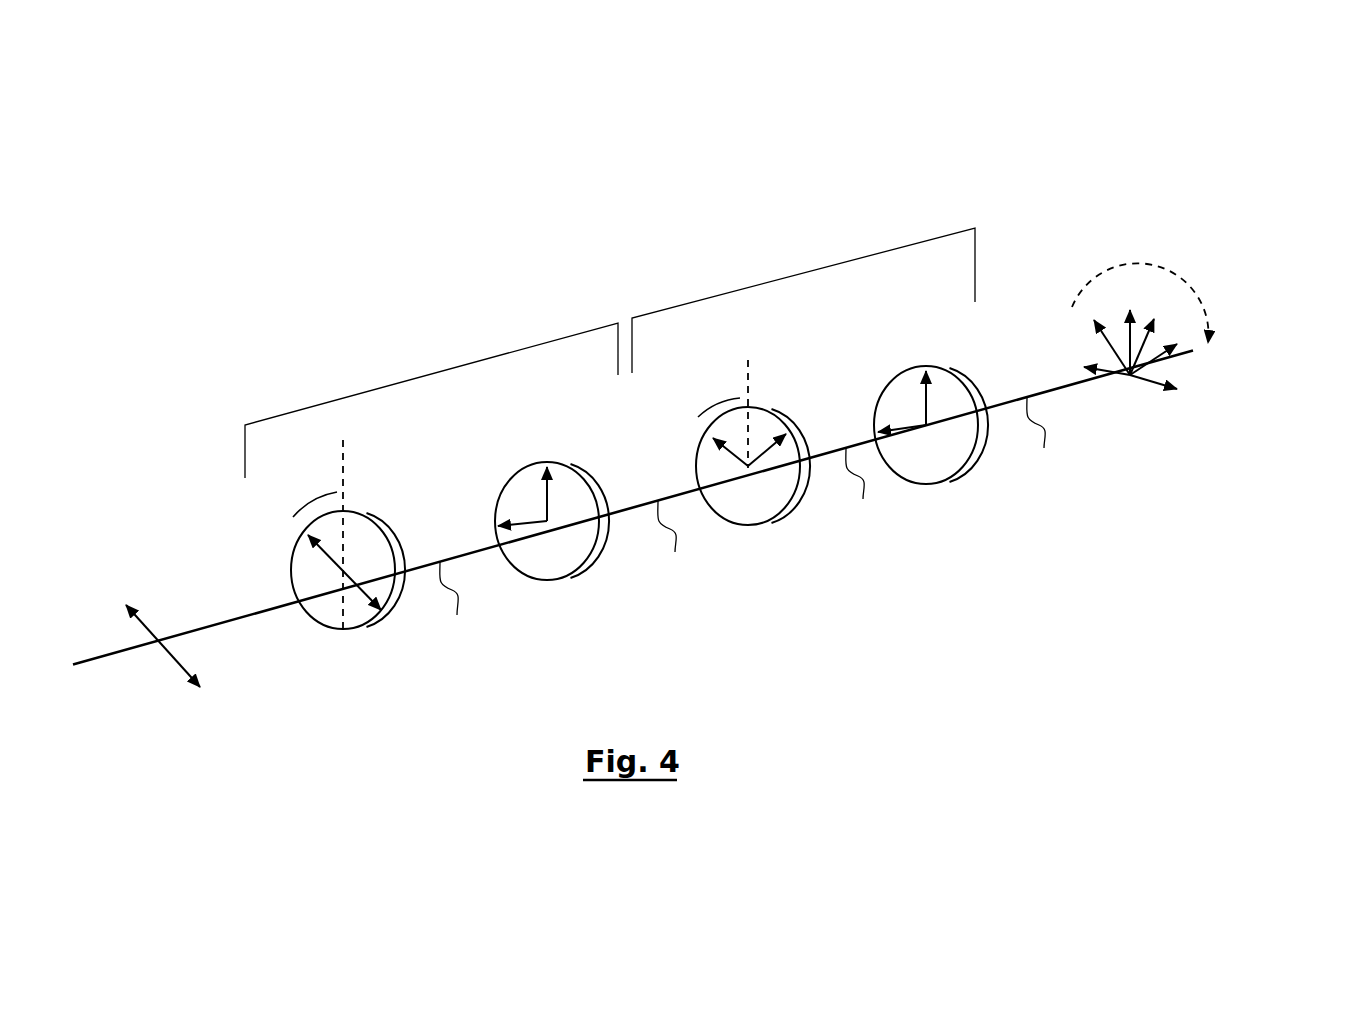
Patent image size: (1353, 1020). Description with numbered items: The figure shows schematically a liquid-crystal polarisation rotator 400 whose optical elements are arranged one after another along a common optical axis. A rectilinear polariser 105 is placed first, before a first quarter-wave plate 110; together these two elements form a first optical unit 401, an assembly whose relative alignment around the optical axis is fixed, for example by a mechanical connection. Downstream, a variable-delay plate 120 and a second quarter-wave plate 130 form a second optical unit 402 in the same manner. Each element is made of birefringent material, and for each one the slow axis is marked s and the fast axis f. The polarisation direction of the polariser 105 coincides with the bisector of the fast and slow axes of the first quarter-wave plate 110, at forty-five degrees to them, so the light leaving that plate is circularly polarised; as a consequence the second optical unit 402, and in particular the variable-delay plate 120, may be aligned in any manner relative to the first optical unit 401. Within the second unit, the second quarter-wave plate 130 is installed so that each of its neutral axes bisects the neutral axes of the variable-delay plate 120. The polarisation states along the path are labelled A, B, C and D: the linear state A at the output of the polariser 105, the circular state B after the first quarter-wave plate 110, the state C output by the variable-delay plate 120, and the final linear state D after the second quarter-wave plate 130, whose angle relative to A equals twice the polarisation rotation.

The polarisation rotator 400 is at (703, 400).
The first optical unit 401 is at (432, 370).
The second optical unit 402 is at (787, 268).
The rectilinear polariser 105 is at (366, 638).
The first quarter-wave plate 110 is at (568, 588).
The variable-delay plate 120 is at (775, 530).
The second quarter-wave plate 130 is at (950, 488).
The point A is at (452, 600).
The point B is at (671, 536).
The point C is at (860, 488).
The point D is at (1041, 439).